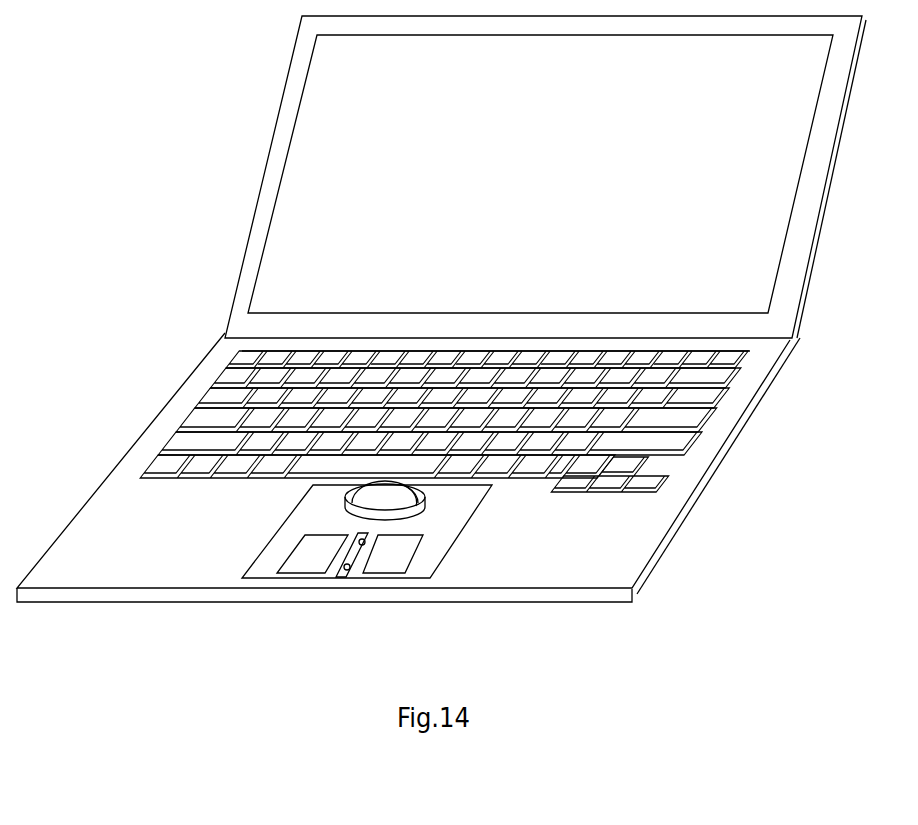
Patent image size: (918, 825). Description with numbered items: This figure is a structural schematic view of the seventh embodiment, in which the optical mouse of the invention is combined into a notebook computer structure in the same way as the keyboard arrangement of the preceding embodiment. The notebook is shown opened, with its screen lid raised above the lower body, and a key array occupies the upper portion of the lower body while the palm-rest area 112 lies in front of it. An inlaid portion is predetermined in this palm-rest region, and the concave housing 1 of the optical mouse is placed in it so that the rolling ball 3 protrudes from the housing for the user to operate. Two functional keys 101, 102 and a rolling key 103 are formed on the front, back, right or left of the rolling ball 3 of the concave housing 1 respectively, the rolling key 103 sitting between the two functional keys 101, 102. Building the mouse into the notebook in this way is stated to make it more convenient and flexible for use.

The concave housing 1 is at (330, 575).
The rolling ball 3 is at (380, 501).
The functional key 101 is at (299, 562).
The functional key 102 is at (396, 560).
The rolling key 103 is at (348, 560).
The palm rest surface of housing 112 is at (622, 552).